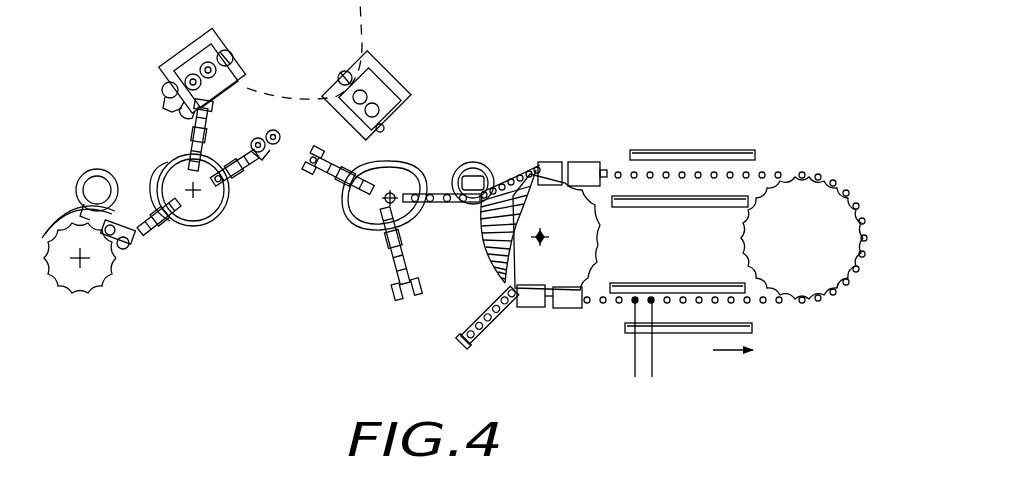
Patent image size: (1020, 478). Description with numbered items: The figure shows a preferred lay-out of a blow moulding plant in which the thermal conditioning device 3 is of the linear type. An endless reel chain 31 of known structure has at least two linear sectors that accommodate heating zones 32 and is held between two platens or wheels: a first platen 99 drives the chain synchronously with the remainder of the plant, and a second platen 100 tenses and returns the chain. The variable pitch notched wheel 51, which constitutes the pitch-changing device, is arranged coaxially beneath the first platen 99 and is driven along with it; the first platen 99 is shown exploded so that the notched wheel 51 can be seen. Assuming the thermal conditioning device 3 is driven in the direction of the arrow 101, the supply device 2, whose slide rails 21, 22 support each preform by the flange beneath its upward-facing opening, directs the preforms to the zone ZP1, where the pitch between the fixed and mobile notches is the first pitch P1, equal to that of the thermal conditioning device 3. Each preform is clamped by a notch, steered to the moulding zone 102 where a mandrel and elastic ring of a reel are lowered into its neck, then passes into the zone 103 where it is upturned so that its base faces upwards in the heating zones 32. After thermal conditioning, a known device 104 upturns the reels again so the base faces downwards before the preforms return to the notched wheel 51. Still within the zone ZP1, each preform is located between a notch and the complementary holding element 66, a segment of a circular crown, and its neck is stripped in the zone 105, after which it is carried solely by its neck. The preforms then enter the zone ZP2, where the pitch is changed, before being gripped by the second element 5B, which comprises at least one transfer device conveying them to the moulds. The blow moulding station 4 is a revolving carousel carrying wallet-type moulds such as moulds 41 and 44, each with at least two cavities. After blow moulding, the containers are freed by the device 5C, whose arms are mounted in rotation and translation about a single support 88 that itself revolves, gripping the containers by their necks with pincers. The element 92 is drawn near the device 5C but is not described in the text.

The supply device 2 is at (504, 321).
The thermal conditioning device 3 is at (724, 257).
The blow moulding station 4 is at (383, 32).
The second element 5B is at (337, 236).
The device for freeing containers 5C is at (207, 236).
The slide rail 21 is at (468, 327).
The slide rail 22 is at (503, 323).
The endless reel chain 31 is at (858, 220).
The heating zone 32 is at (712, 160).
The mould 41 is at (368, 67).
The mould 44 is at (181, 62).
The variable pitch notched wheel 51 is at (481, 246).
The complementary holding element 66 is at (518, 165).
The single support 88 is at (163, 160).
The gear wheel 92 is at (93, 280).
The first platen 99 is at (582, 272).
The second platen 100 is at (830, 257).
The arrow 101 is at (730, 357).
The moulding zone 102 is at (539, 307).
The upturning zone 103 is at (567, 302).
The upturning device 104 is at (586, 168).
The stripping zone 105 is at (547, 168).
The first pitch P1 is at (595, 363).
The first pitch zone ZP1 is at (417, 233).
The pitch changing zone ZP2 is at (510, 156).